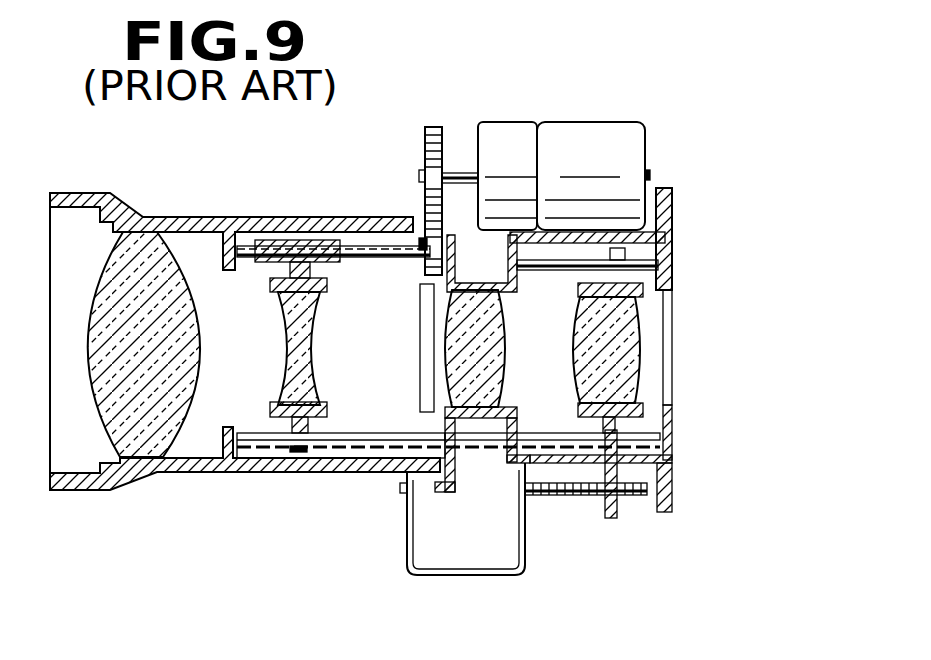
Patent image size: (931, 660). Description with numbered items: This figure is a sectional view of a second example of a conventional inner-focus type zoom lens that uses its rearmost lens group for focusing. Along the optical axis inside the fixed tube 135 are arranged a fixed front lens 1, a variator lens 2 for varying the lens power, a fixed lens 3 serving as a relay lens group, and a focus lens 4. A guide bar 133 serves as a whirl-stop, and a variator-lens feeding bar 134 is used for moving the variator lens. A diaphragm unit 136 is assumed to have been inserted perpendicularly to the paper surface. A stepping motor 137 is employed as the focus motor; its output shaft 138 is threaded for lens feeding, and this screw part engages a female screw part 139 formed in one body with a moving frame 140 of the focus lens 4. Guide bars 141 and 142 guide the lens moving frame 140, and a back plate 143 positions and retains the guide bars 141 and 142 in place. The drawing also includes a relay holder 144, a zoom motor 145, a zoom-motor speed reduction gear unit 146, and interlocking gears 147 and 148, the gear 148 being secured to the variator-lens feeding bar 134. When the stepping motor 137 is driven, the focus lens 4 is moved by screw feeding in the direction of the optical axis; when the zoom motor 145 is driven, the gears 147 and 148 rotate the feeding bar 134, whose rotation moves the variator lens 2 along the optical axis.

The fixed front lens 1 is at (100, 297).
The variator lens 2 is at (282, 352).
The fixed lens 3 is at (487, 317).
The focus lens 4 is at (622, 325).
The guide bar 133 is at (322, 440).
The variator-lens feeding bar 134 is at (357, 243).
The fixed tube 135 is at (178, 470).
The diaphragm unit 136 is at (422, 348).
The stepping motor 137 is at (477, 552).
The output shaft 138 is at (556, 497).
The female screw part 139 is at (608, 520).
The moving frame 140 is at (636, 383).
The guide bar 141 is at (660, 460).
The guide bar 142 is at (648, 256).
The back plate 143 is at (668, 415).
The relay holder 144 is at (582, 237).
The zoom motor 145 is at (578, 140).
The zoom-motor speed reduction gear unit 146 is at (510, 140).
The interlocking gear 147 is at (433, 125).
The interlocking gear 148 is at (425, 250).